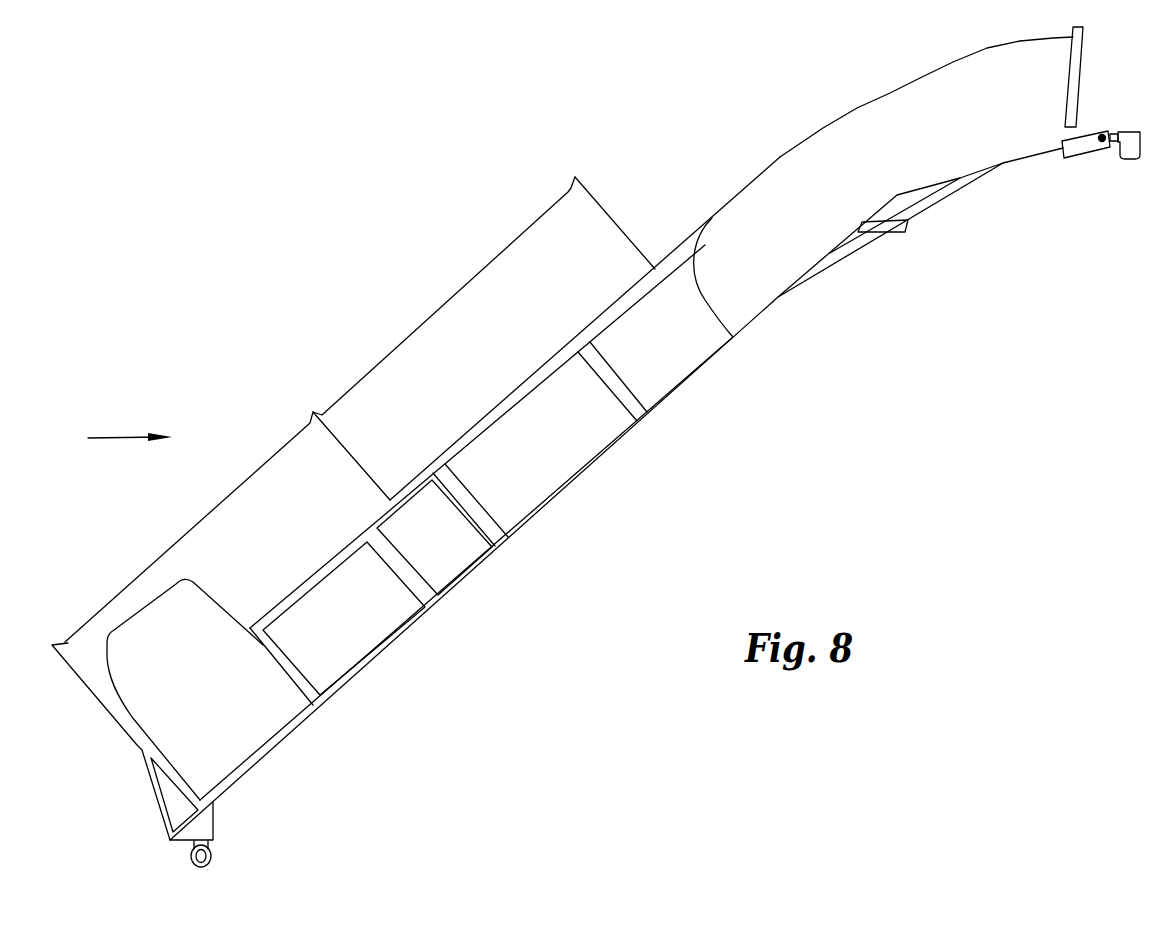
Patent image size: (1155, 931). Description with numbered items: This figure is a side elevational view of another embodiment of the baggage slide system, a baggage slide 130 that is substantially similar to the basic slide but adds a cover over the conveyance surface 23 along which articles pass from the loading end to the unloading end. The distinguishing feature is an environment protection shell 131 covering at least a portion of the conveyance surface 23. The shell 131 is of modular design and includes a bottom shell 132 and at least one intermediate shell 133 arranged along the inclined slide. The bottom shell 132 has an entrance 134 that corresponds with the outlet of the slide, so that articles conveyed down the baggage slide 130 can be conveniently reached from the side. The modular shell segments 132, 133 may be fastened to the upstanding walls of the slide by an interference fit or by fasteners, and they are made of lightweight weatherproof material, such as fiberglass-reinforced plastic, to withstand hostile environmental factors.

The conveyance surface 23 is at (243, 765).
The baggage slide 130 is at (130, 422).
The environment protection shell 131 is at (267, 411).
The bottom shell 132 is at (100, 627).
The intermediate shell 133 is at (494, 317).
The entrance 134 is at (185, 633).